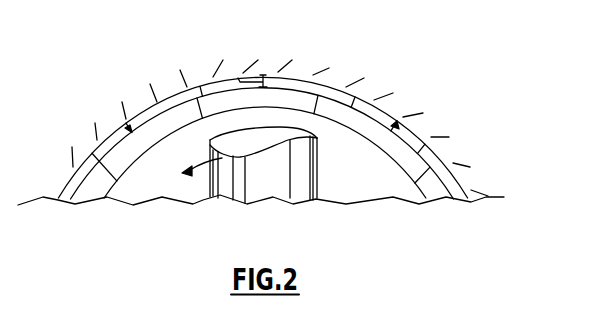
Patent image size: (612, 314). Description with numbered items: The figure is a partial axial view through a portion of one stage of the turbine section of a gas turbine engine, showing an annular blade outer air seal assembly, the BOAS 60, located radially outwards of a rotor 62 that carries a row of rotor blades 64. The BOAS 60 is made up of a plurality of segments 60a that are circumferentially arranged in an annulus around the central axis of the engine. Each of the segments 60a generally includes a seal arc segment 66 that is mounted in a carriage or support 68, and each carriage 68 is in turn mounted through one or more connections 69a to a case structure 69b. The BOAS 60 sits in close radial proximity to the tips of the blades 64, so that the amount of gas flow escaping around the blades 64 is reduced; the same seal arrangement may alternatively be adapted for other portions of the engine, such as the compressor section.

The blade outer air seal assembly 60 is at (403, 158).
The segments 60a is at (388, 78).
The rotor 62 is at (321, 195).
The rotor blades 64 is at (207, 190).
The seal arc segment 66 is at (306, 108).
The carriage 68 is at (284, 92).
The connections 69a is at (238, 78).
The case structure 69b is at (400, 126).